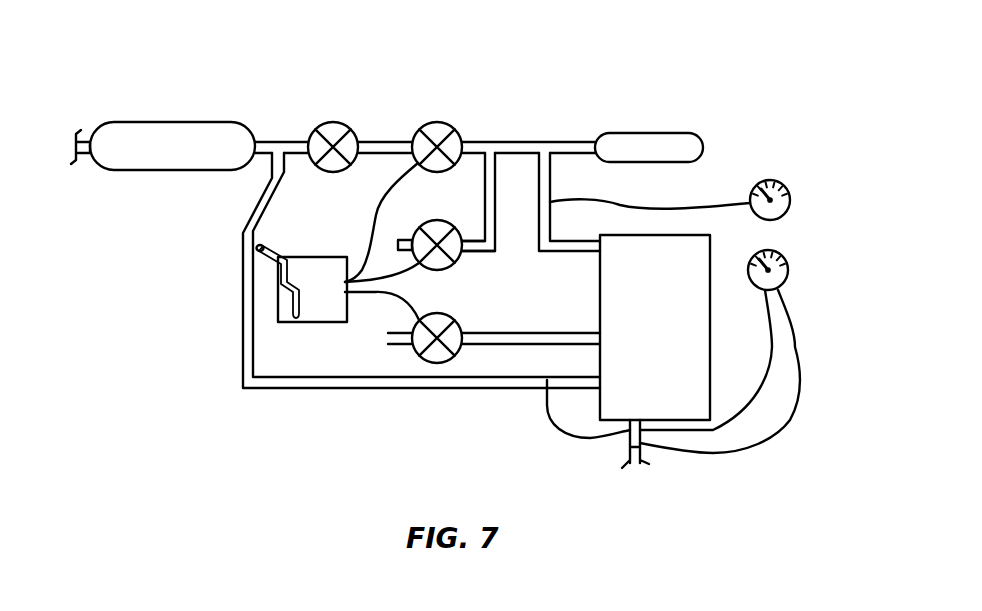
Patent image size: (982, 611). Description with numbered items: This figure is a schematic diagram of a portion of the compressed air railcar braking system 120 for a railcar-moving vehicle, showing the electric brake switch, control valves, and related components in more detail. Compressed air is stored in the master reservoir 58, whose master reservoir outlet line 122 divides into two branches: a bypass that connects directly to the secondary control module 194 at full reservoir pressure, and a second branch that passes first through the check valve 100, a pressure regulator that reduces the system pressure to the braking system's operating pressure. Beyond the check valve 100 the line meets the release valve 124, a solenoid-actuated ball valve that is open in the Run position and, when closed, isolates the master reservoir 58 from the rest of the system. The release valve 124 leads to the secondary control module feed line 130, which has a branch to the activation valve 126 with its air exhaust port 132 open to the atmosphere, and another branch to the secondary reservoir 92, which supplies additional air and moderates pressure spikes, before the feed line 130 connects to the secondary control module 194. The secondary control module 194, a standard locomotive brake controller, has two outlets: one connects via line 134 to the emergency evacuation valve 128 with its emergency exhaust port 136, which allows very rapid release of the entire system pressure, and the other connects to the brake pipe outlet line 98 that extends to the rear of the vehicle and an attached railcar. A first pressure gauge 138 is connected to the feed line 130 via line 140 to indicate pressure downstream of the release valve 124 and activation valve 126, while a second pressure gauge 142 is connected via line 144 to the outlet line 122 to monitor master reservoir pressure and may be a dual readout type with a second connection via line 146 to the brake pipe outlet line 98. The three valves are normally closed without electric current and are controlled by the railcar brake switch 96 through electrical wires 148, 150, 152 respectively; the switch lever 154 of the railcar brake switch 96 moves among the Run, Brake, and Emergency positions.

The master reservoir 58 is at (186, 159).
The secondary reservoir 92 is at (662, 159).
The railcar brake switch 96 is at (313, 325).
The brake pipe outlet line 98 is at (627, 453).
The check valve 100 is at (335, 128).
The compressed air railcar braking system 120 is at (184, 304).
The master reservoir outlet line 122 is at (257, 211).
The release valve 124 is at (437, 130).
The activation valve 126 is at (463, 261).
The emergency evacuation valve 128 is at (453, 335).
The secondary control module feed line 130 is at (512, 146).
The air exhaust port 132 is at (402, 240).
The line 134 is at (550, 345).
The emergency exhaust port 136 is at (388, 340).
The first pressure gauge 138 is at (788, 182).
The line 140 is at (665, 210).
The second pressure gauge 142 is at (787, 251).
The line 144 is at (765, 322).
The line 146 is at (797, 347).
The electrical wire 148 is at (373, 217).
The electrical wire 150 is at (400, 272).
The electrical wire 152 is at (392, 295).
The switch lever 154 is at (273, 247).
The secondary control module 194 is at (679, 340).